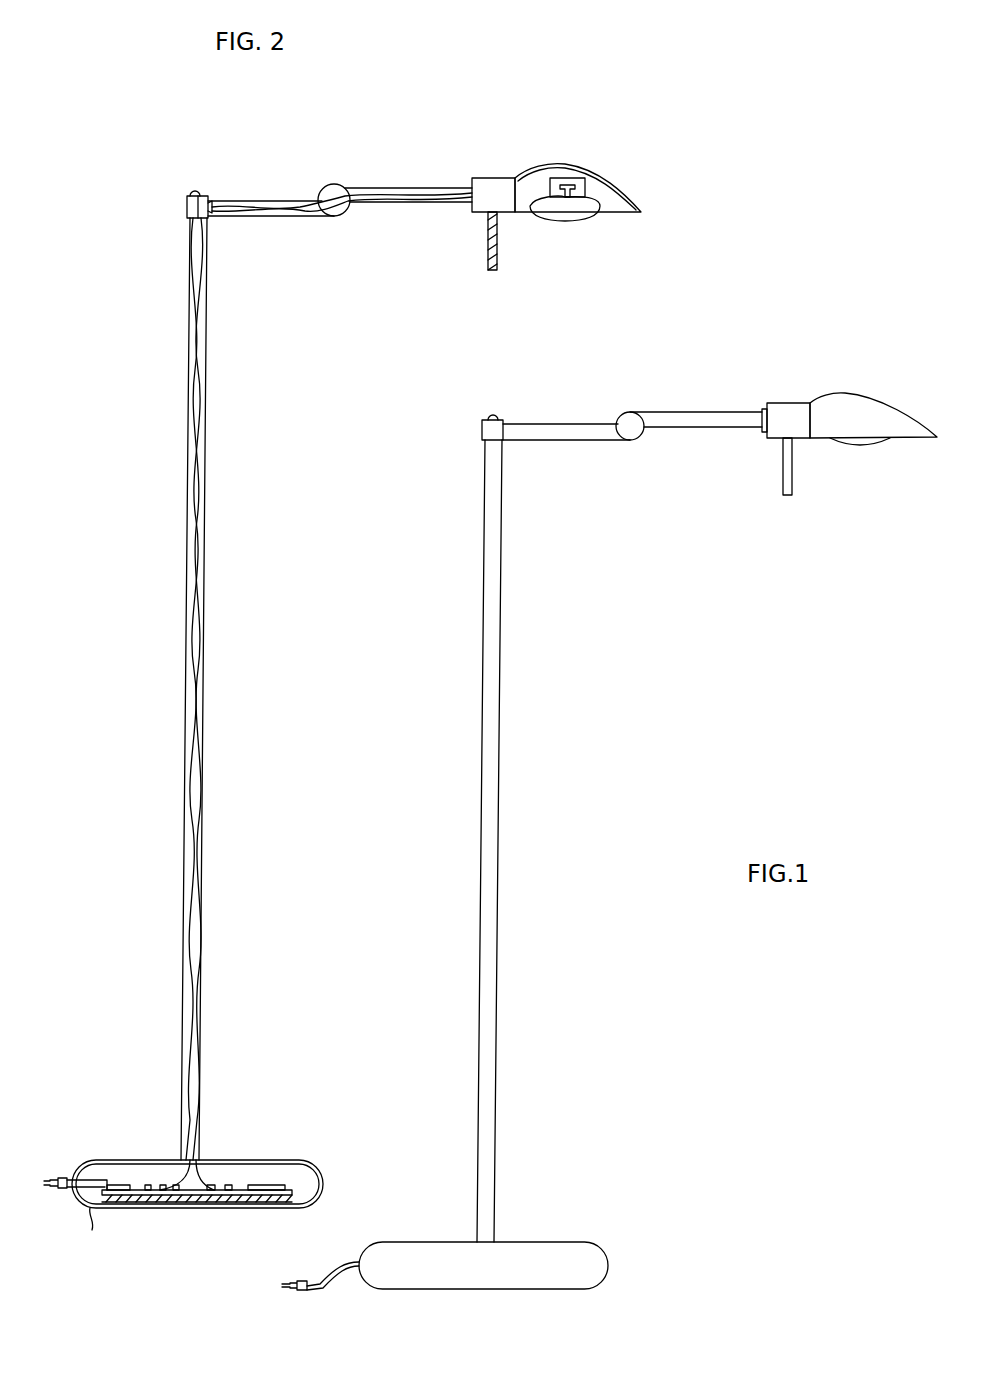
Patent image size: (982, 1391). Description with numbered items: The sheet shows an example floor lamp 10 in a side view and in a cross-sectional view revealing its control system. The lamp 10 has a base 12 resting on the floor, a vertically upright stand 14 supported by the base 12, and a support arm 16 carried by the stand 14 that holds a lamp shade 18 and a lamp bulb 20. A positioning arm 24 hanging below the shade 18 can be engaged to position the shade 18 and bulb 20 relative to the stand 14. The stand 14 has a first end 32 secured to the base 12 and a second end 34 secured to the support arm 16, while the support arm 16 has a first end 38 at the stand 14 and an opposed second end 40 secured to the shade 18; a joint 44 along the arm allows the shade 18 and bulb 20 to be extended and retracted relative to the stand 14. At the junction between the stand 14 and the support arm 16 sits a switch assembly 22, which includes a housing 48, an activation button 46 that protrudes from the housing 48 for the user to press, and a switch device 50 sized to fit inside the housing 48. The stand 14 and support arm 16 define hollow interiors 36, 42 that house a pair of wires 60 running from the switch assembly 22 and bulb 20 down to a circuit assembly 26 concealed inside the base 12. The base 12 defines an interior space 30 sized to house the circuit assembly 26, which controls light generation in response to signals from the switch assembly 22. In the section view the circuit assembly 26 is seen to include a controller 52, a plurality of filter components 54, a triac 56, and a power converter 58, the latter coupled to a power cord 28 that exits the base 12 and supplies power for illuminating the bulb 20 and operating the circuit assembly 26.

In FIG. 2, the floor lamp 10 is at (385, 158).
In FIG. 1, the floor lamp 10 is at (810, 362).
In FIG. 2, the base 12 is at (323, 1174).
In FIG. 1, the base 12 is at (610, 1262).
In FIG. 2, the stand 14 is at (207, 595).
In FIG. 1, the stand 14 is at (499, 918).
In FIG. 2, the support arm 16 is at (273, 196).
In FIG. 1, the support arm 16 is at (712, 404).
In FIG. 2, the lamp shade 18 is at (574, 167).
In FIG. 1, the lamp shade 18 is at (870, 395).
In FIG. 2, the lamp bulb 20 is at (578, 222).
In FIG. 1, the lamp bulb 20 is at (865, 450).
In FIG. 2, the switch assembly 22 is at (185, 194).
In FIG. 2, the positioning arm 24 is at (488, 258).
In FIG. 1, the positioning arm 24 is at (782, 488).
In FIG. 2, the circuit assembly 26 is at (300, 1176).
In FIG. 2, the power cord 28 is at (57, 1190).
In FIG. 1, the power cord 28 is at (318, 1290).
In FIG. 2, the interior space 30 is at (306, 1196).
In FIG. 2, the first end of stand 32 is at (201, 1132).
In FIG. 1, the first end of stand 32 is at (495, 1222).
In FIG. 2, the second end of stand 34 is at (189, 232).
In FIG. 1, the second end of stand 34 is at (503, 462).
In FIG. 2, the hollow interior of stand 36 is at (204, 718).
In FIG. 2, the first end of support arm 38 is at (226, 217).
In FIG. 1, the first end of support arm 38 is at (525, 428).
In FIG. 2, the second end of support arm 40 is at (430, 188).
In FIG. 1, the second end of support arm 40 is at (722, 430).
In FIG. 2, the hollow interior of support arm 42 is at (336, 187).
In FIG. 2, the joint 44 is at (339, 216).
In FIG. 1, the joint 44 is at (628, 442).
In FIG. 2, the activation button 46 is at (194, 191).
In FIG. 1, the activation button 46 is at (494, 416).
In FIG. 2, the housing 48 is at (187, 208).
In FIG. 1, the housing 48 is at (482, 434).
In FIG. 2, the switch device 50 is at (204, 201).
In FIG. 2, the controller 52 is at (268, 1185).
In FIG. 2, the filter components 54 is at (176, 1185).
In FIG. 2, the triac 56 is at (228, 1185).
In FIG. 2, the power converter 58 is at (110, 1185).
In FIG. 2, the pair of wires 60 is at (198, 850).